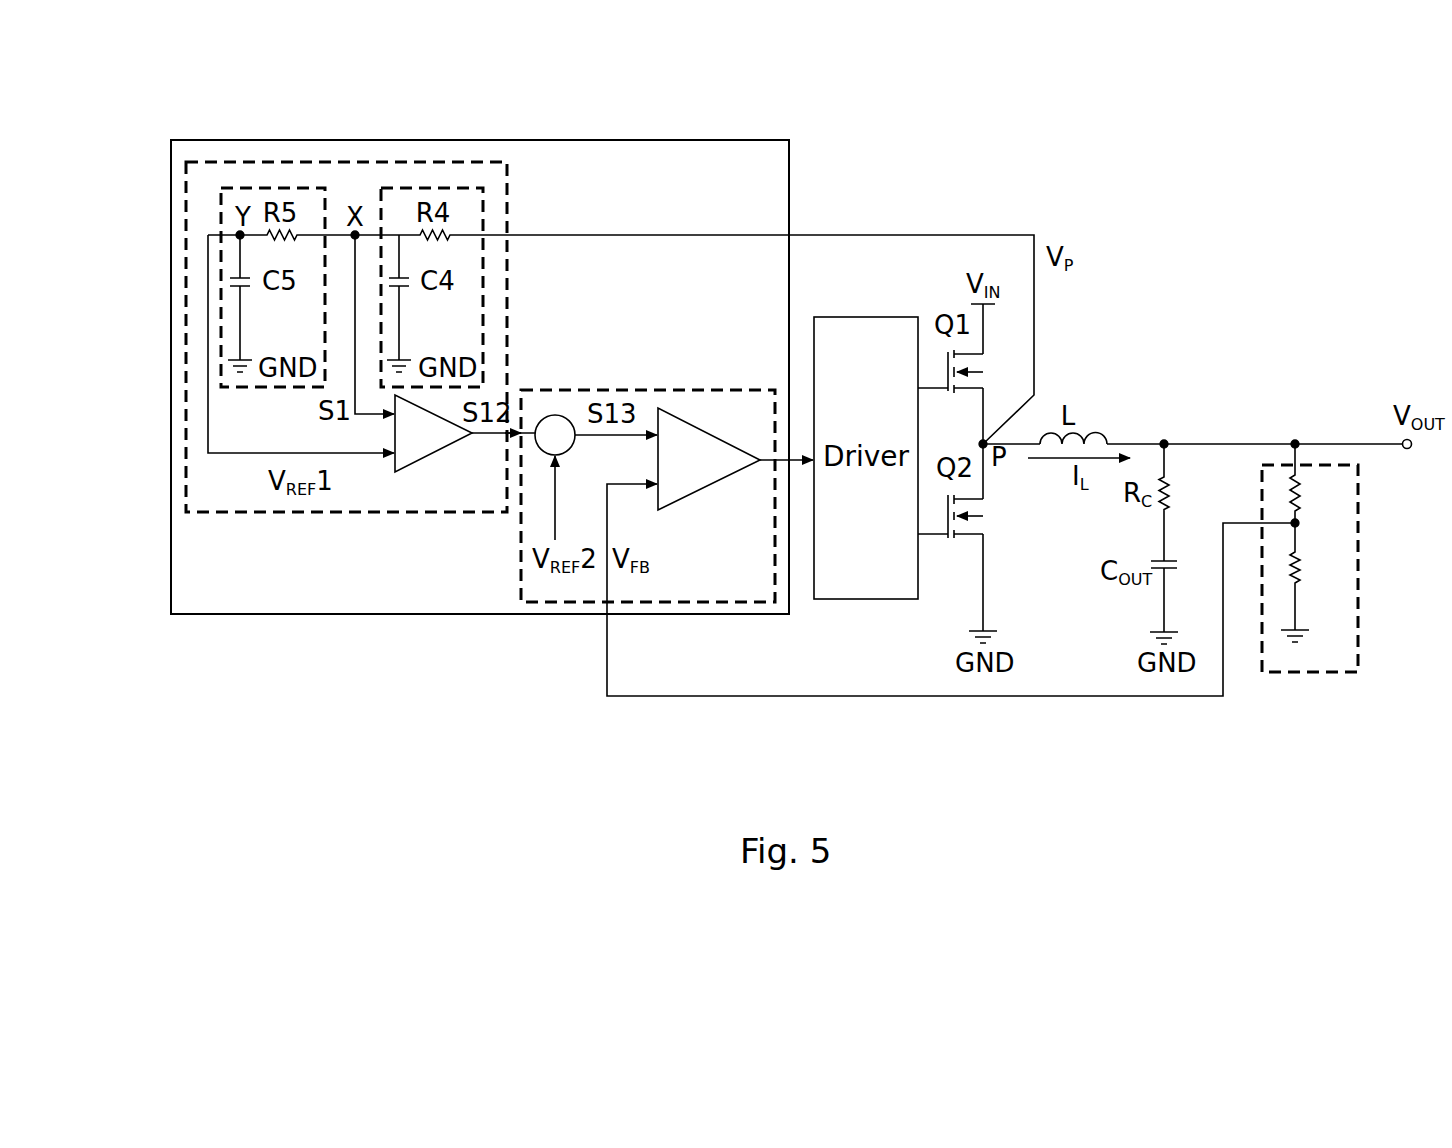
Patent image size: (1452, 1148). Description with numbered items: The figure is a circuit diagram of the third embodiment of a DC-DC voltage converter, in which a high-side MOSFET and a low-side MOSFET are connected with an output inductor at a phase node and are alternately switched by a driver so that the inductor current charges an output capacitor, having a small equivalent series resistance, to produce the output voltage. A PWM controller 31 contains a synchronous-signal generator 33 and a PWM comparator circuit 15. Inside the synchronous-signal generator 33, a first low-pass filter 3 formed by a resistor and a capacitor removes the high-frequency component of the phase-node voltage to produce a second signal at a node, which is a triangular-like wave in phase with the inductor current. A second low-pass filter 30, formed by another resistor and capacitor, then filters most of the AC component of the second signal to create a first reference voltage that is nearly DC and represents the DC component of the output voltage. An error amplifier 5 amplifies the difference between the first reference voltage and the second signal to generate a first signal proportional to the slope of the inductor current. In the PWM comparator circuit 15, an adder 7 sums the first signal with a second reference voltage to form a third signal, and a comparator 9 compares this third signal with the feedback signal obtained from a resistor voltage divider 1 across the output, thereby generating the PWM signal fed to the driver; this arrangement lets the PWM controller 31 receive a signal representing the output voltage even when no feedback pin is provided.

The resistor voltage divider 1 is at (1360, 563).
The first low-pass filter 3 is at (485, 283).
The error amplifier 5 is at (440, 452).
The adder 7 is at (555, 414).
The comparator 9 is at (718, 483).
The PWM comparator circuit 15 is at (645, 390).
The second low-pass filter 30 is at (222, 290).
The PWM controller 31 is at (482, 617).
The synchronous-signal generator 33 is at (348, 513).